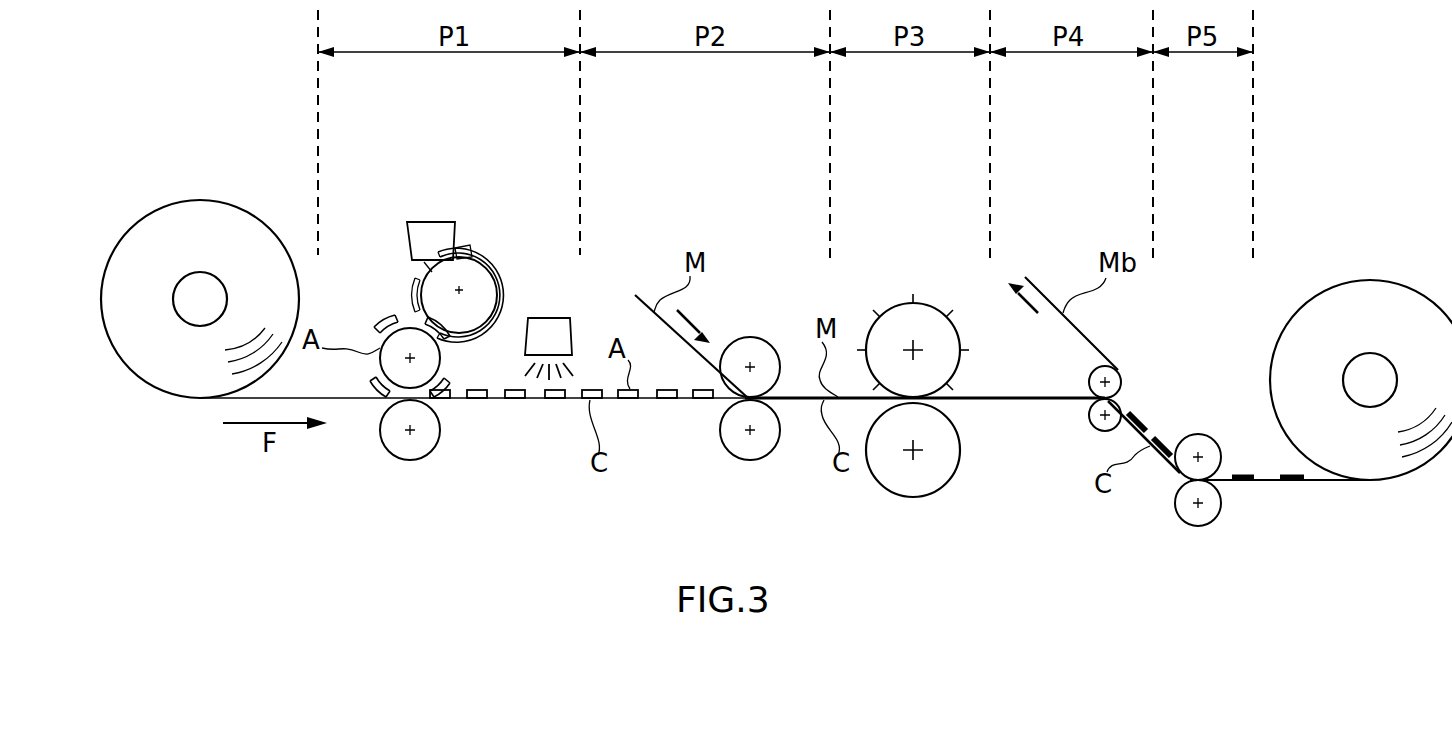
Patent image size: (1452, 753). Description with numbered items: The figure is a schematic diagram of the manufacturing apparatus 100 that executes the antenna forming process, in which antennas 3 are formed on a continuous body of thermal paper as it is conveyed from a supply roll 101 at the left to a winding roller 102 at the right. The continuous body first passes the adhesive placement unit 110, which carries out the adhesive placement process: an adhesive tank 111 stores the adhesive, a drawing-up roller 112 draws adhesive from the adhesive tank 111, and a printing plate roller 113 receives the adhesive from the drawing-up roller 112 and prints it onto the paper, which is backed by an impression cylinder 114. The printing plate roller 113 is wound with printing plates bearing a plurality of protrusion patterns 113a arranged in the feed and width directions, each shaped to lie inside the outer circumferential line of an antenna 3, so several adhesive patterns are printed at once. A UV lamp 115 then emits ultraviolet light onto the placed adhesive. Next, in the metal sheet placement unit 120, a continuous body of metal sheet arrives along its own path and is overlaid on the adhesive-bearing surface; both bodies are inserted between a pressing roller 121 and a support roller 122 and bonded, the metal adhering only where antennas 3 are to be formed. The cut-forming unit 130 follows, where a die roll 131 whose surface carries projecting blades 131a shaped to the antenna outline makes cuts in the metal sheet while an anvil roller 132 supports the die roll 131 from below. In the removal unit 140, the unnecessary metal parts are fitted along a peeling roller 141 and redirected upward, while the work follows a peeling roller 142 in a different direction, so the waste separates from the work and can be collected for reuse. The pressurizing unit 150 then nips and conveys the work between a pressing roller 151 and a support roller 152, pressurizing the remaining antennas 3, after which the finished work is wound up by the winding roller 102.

The manufacturing apparatus 100 is at (1350, 112).
The supply roll of base material 101 is at (200, 282).
The winding roller 102 is at (1362, 368).
The adhesive placement unit 110 is at (368, 166).
The adhesive tank 111 is at (437, 236).
The drawing-up roller 112 is at (462, 254).
The printing plate roller 113 is at (412, 342).
The protrusion patterns 113a is at (390, 333).
The impression cylinder 114 is at (410, 458).
The UV lamp 115 is at (540, 324).
The metal sheet placement unit 120 is at (630, 166).
The pressing roller 121 is at (762, 340).
The support roller 122 is at (735, 448).
The cut-forming unit 130 is at (876, 166).
The die roll 131 is at (925, 305).
The projecting blades 131a is at (875, 312).
The anvil roller 132 is at (893, 473).
The removal unit 140 is at (1030, 231).
The peeling roller 141 is at (1090, 380).
The peeling roller 142 is at (1095, 425).
The pressurizing unit 150 is at (1201, 231).
The pressing roller 151 is at (1190, 445).
The support roller 152 is at (1180, 510).
The antenna 3 is at (1135, 415).